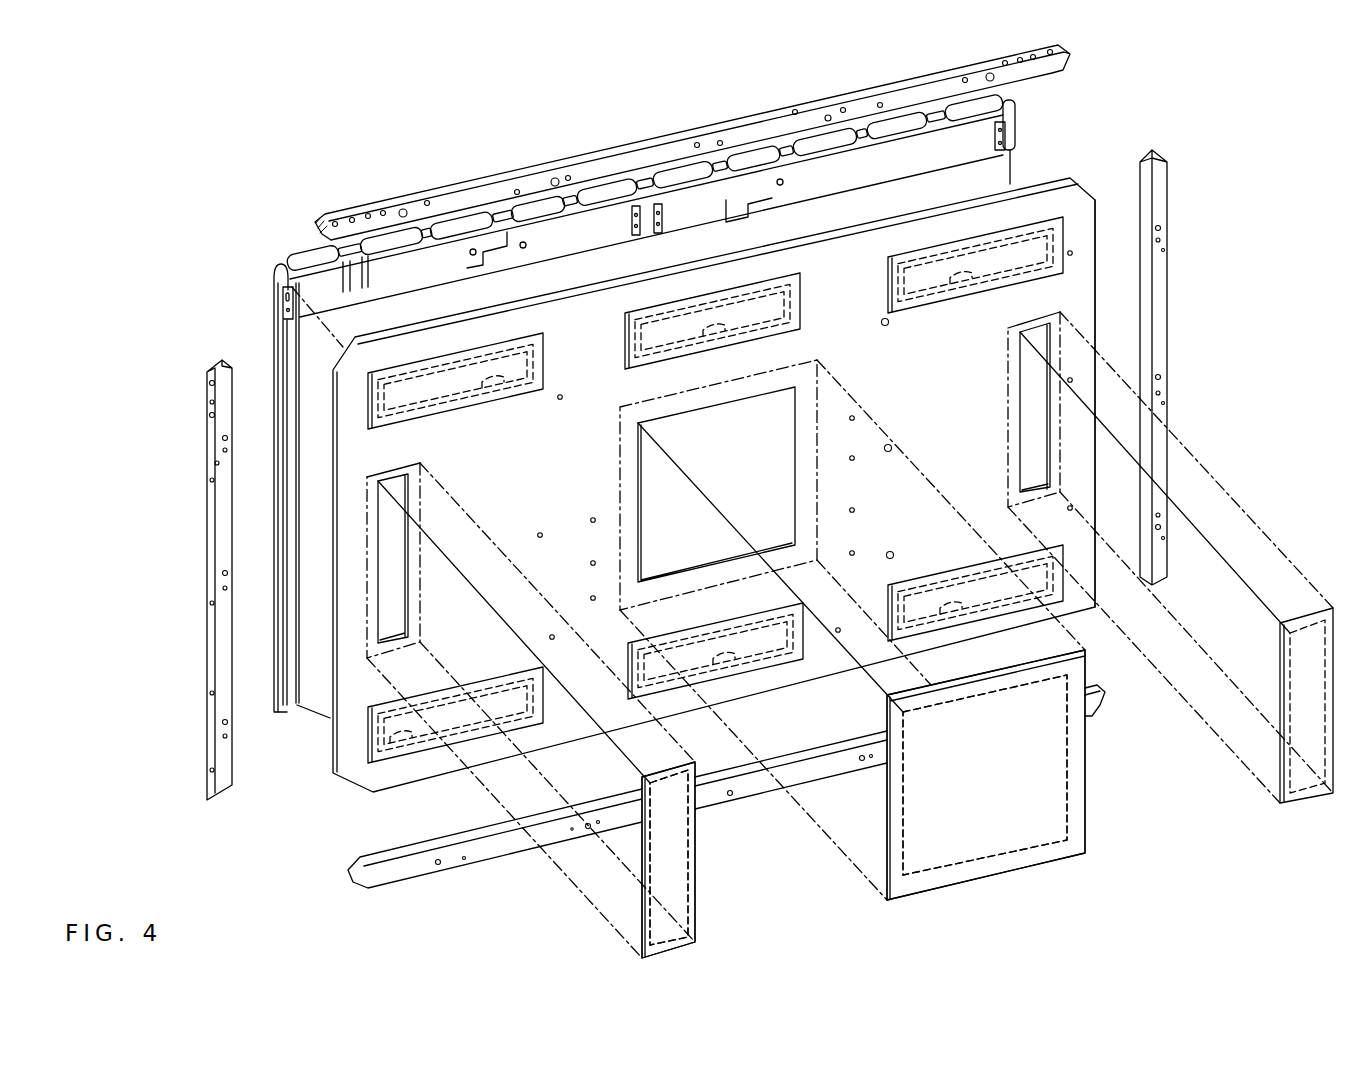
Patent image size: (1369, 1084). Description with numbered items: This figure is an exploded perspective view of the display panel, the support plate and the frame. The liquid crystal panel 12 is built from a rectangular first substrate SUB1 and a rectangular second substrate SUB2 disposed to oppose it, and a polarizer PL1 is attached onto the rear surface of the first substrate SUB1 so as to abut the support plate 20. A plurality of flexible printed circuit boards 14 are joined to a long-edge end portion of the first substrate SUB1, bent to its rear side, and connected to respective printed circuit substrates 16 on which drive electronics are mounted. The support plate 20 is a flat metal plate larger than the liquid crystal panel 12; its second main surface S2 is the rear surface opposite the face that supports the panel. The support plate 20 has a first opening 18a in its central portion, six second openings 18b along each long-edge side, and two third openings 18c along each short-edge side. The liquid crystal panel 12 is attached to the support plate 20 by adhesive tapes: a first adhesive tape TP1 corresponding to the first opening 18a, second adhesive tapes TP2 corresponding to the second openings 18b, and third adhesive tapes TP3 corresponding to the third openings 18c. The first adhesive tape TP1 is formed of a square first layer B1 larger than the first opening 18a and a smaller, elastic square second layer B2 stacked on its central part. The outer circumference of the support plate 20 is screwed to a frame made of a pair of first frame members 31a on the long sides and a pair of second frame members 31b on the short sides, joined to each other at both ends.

The liquid crystal panel 12 is at (262, 352).
The flexible printed circuit board 14 is at (312, 258).
The printed circuit substrate 16 is at (401, 278).
The first opening 18a is at (788, 484).
The second opening 18b is at (503, 393).
The third opening 18c is at (395, 587).
The support plate 20 is at (1077, 185).
The first frame member 31a is at (637, 146).
The second frame member 31b is at (218, 540).
The second main surface S2 is at (1075, 283).
The first adhesive tape TP1 is at (1015, 872).
The second adhesive tape TP2 is at (498, 350).
The third adhesive tape TP3 is at (695, 944).
The first layer B1 is at (695, 865).
The second layer B2 is at (667, 825).
The polarizer PL1 is at (315, 692).
The first substrate SUB1 is at (295, 712).
The second substrate SUB2 is at (277, 690).